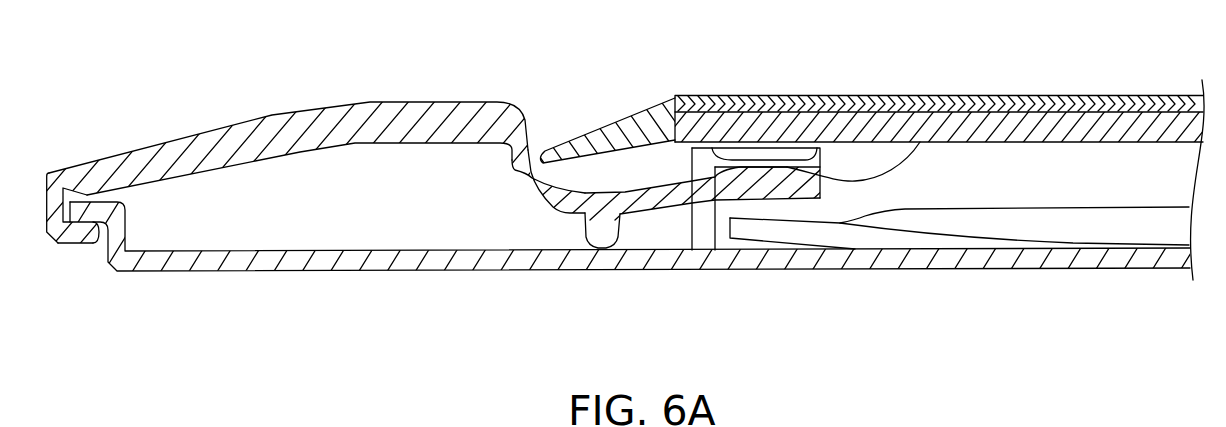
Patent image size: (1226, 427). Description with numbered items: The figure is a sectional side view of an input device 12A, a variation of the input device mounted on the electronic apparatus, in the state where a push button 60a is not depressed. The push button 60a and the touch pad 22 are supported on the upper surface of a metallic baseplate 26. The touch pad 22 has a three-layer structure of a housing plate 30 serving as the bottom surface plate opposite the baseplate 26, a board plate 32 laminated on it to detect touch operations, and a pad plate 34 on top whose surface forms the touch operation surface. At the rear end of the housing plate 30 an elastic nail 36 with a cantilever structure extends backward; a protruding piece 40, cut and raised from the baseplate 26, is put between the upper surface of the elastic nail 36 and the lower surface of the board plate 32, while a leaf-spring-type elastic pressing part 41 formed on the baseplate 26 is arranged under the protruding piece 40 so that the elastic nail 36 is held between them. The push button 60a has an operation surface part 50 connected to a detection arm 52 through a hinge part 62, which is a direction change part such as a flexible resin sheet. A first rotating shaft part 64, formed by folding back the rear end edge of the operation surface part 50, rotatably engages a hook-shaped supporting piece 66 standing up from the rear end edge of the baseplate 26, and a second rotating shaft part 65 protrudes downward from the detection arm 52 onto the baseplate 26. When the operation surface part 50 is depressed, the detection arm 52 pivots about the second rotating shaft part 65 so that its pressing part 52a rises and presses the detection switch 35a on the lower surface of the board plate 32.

The input device 12A is at (147, 37).
The push button 60a is at (272, 116).
The operation surface part 50 is at (413, 101).
The pressing part 52a is at (770, 159).
The protruding piece 40 is at (806, 159).
The touch pad 22 is at (939, 96).
The housing plate 30 is at (1014, 160).
The board plate 32 is at (1063, 114).
The pad plate 34 is at (1120, 97).
The first rotating shaft part 64 is at (83, 245).
The hook-shaped supporting piece 66 is at (96, 235).
The baseplate 26 is at (345, 270).
The hinge part 62 is at (532, 175).
The second rotating shaft part 65 is at (602, 234).
The detection arm 52 is at (663, 200).
The detection switch 35a is at (713, 168).
The elastic pressing part 41 is at (802, 233).
The elastic nail 36 is at (857, 198).